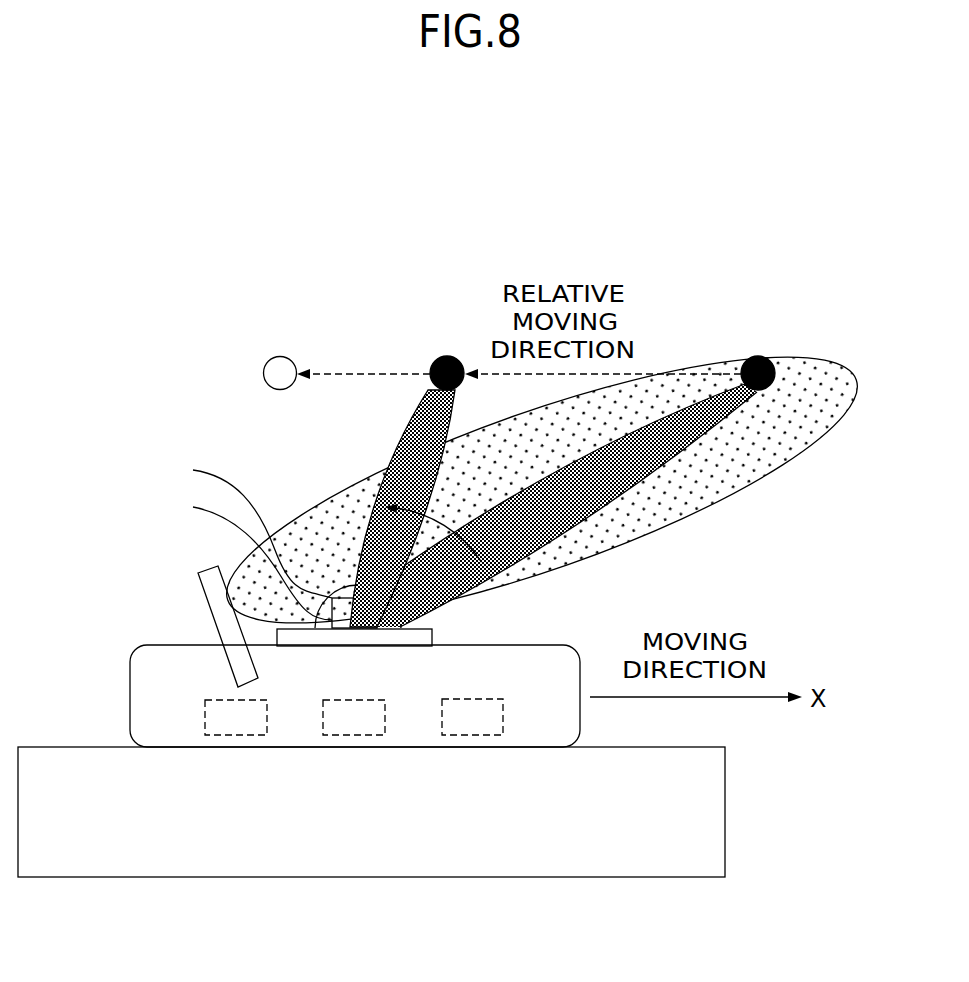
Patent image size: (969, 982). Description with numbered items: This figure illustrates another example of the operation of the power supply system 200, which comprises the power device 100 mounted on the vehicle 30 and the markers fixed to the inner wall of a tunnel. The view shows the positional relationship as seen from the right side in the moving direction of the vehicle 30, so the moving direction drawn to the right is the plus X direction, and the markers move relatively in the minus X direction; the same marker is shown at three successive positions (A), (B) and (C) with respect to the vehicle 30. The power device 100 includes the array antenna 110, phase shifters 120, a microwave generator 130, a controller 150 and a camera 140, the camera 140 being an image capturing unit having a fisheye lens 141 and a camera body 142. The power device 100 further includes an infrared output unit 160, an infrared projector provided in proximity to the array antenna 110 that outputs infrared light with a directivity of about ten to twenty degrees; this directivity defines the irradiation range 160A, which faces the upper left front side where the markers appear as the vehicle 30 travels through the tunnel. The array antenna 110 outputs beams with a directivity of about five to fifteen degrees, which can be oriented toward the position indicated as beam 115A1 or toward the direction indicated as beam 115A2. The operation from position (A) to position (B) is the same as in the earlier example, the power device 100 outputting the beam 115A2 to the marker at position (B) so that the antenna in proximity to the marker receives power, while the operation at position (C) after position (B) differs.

The power supply system 200 is at (732, 196).
The power device 100 is at (120, 645).
The array antenna 110 is at (438, 634).
The beam 115A1 is at (721, 421).
The beam 115A2 is at (402, 437).
The phase shifters 120 is at (233, 735).
The microwave generator 130 is at (352, 735).
The controller 150 is at (470, 735).
The camera 140 is at (232, 541).
The fisheye lens 141 is at (240, 529).
The camera body 142 is at (240, 559).
The infrared output unit 160 is at (200, 596).
The irradiation range 160A is at (841, 356).
The vehicle 30 is at (727, 810).